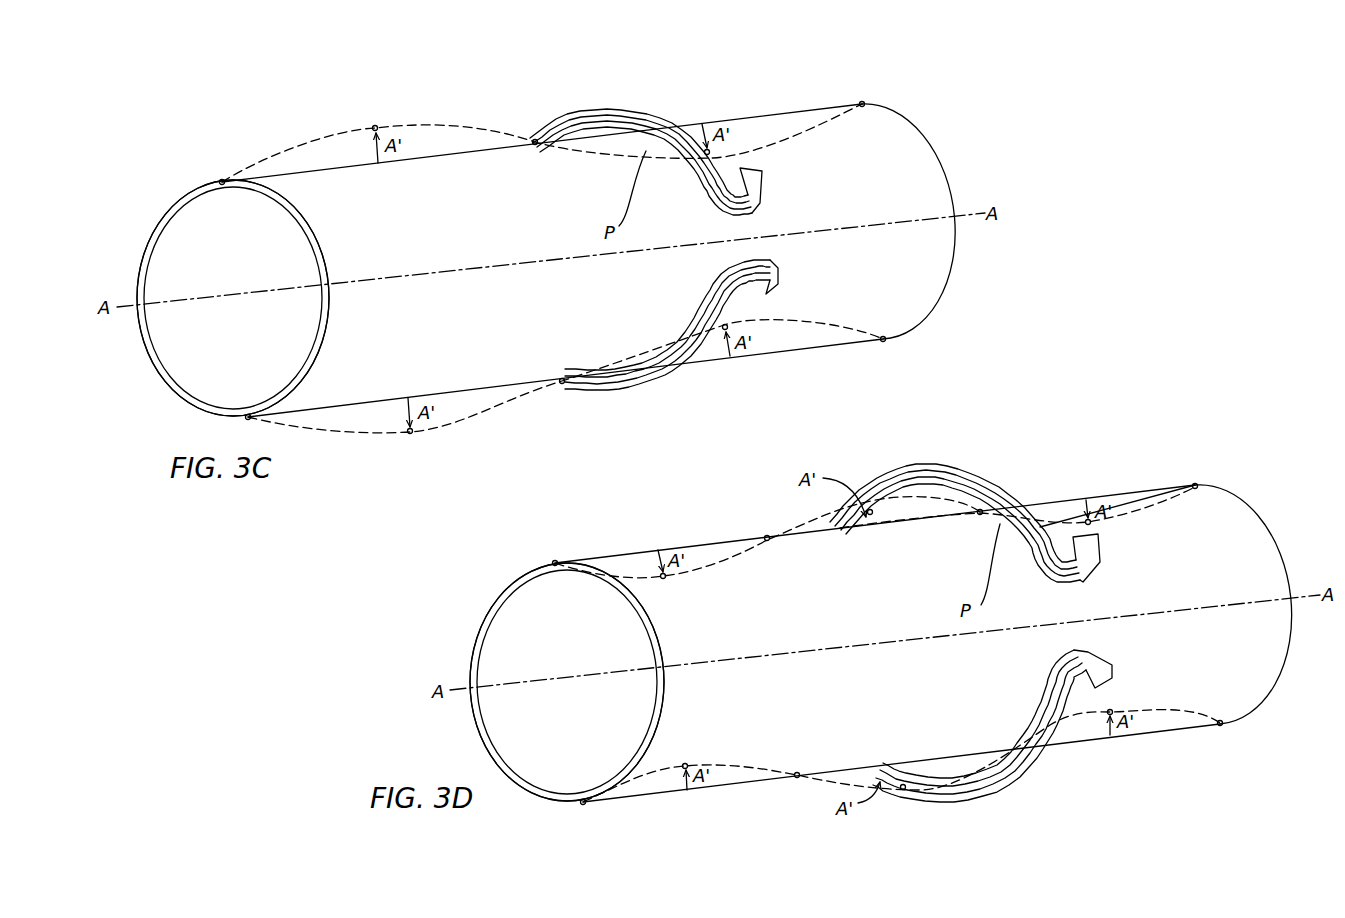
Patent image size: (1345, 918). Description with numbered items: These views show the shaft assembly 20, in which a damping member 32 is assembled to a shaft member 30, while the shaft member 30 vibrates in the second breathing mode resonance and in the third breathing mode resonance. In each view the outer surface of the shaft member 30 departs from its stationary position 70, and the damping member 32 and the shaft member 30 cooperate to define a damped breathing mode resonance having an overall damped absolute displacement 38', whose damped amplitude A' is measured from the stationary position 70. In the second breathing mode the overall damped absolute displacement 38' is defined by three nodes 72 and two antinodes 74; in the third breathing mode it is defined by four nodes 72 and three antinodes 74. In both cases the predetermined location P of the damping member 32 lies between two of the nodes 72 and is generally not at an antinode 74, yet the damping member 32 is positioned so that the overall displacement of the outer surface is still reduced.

In FIG. 3C, the shaft assembly 20 is at (887, 71).
In FIG. 3D, the shaft assembly 20 is at (1226, 458).
In FIG. 3C, the shaft member 30 is at (158, 220).
In FIG. 3D, the shaft member 30 is at (492, 605).
In FIG. 3D, the damping member 32 is at (975, 477).
In FIG. 3C, the overall damped absolute displacement 38' is at (549, 267).
In FIG. 3D, the overall damped absolute displacement 38' is at (887, 618).
In FIG. 3D, the stationary position 70 is at (1055, 505).
In FIG. 3C, the node 72 is at (223, 186).
In FIG. 3D, the node 72 is at (556, 566).
In FIG. 3C, the antinode 74 is at (373, 126).
In FIG. 3D, the antinode 74 is at (666, 578).